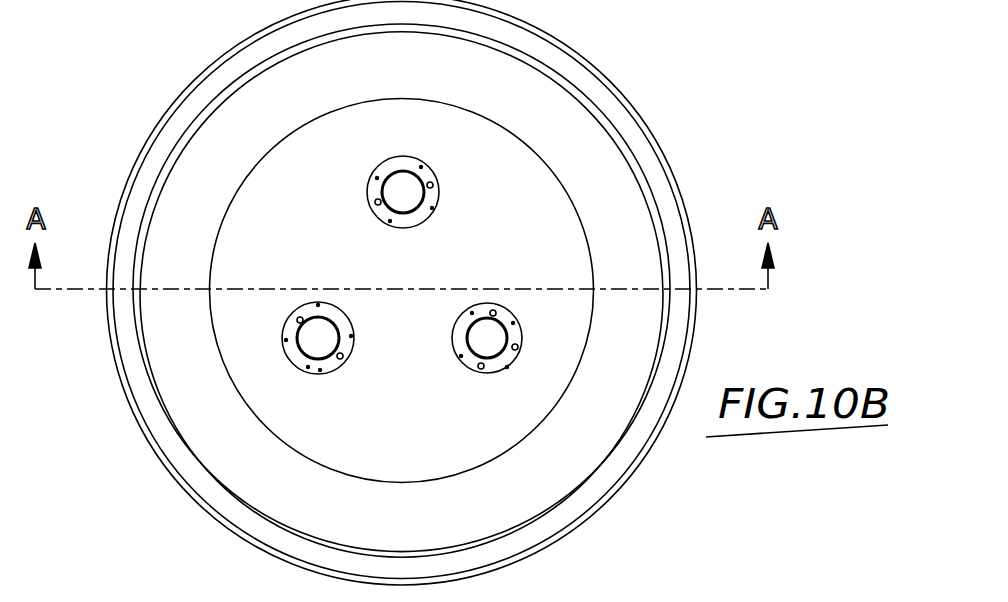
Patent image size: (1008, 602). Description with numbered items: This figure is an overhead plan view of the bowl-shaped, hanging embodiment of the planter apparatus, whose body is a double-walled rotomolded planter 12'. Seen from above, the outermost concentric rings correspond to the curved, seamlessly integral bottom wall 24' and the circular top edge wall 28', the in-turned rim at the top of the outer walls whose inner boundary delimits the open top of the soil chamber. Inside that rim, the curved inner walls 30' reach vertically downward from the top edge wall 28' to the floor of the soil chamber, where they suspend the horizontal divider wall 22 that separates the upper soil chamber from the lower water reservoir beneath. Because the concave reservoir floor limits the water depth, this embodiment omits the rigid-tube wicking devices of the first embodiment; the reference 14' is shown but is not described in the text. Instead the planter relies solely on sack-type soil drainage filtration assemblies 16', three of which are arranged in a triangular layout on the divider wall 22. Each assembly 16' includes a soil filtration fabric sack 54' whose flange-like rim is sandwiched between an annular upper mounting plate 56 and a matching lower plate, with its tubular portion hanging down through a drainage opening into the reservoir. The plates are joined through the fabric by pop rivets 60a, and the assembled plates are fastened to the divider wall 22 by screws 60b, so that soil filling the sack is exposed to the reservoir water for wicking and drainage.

The double-walled rotomolded planter 12' is at (425, 292).
The lid assembly 14' is at (650, 21).
The sack-type soil drainage filtration assembly 16' is at (429, 274).
The divider wall 22 is at (547, 380).
The bottom wall 24' is at (727, 599).
The top edge wall 28' is at (416, 290).
The inner walls 30' is at (402, 291).
The soil filtration fabric sack 54' is at (355, 199).
The upper mounting plate 56 is at (415, 221).
The pop rivets 60a is at (433, 183).
The screws 60b is at (376, 176).